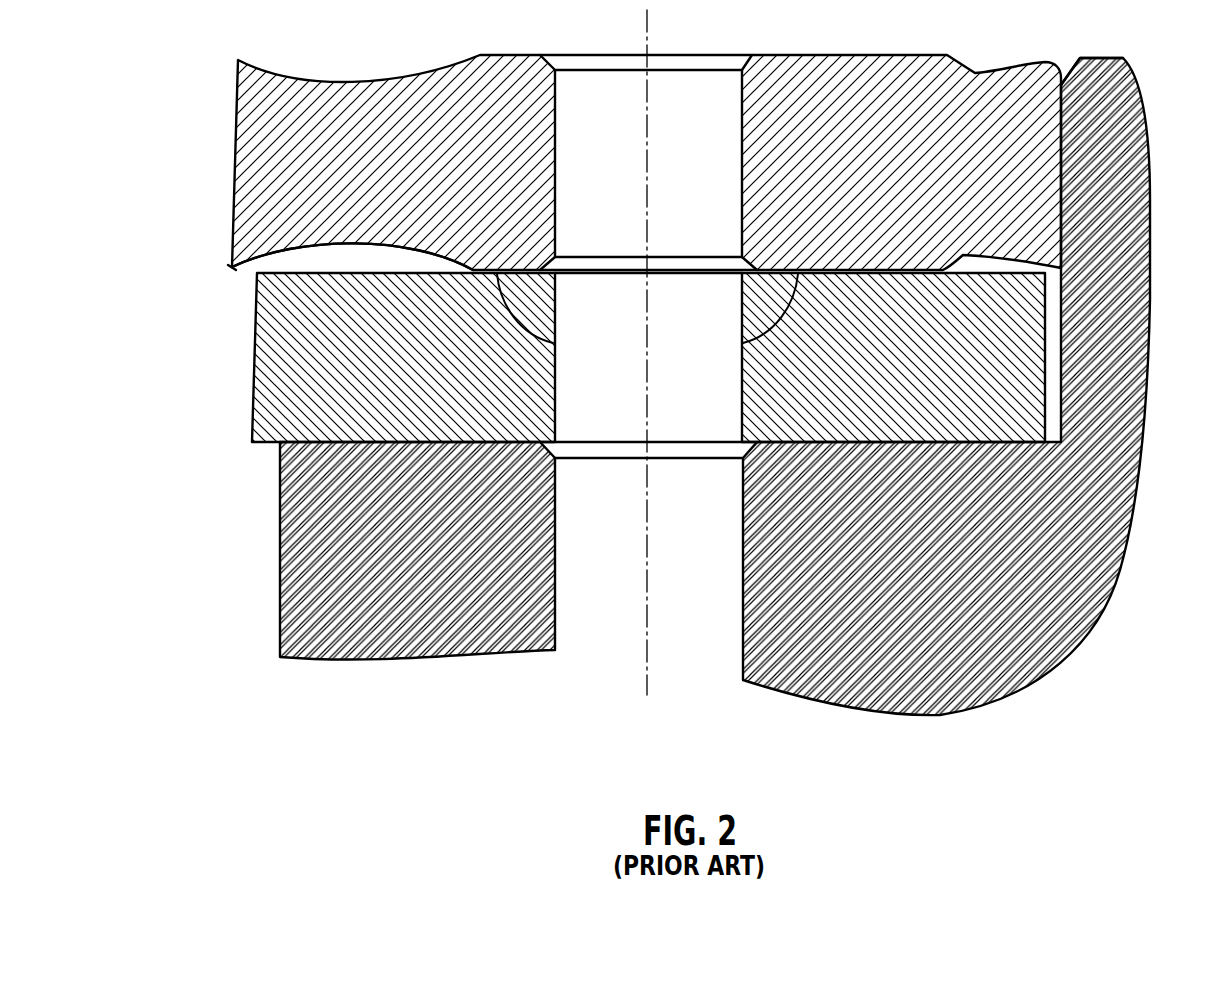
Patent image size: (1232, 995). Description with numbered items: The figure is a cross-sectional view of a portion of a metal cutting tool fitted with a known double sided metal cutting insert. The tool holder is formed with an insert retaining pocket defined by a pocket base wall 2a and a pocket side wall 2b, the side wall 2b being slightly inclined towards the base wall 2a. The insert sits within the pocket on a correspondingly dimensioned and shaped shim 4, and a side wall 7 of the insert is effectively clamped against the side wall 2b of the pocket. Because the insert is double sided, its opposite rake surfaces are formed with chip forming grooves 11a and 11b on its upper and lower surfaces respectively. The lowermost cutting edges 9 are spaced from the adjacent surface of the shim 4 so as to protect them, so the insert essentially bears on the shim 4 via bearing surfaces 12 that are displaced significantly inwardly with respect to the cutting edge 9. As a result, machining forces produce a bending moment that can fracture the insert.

The pocket base wall 2a is at (306, 440).
The pocket side wall 2b is at (1060, 107).
The shim 4 is at (250, 345).
The side wall of the cutting insert 7 is at (1063, 90).
The lowermost cutting edges 9 is at (233, 267).
The chip forming groove 11a is at (317, 80).
The chip forming groove 11b is at (292, 253).
The bearing surfaces 12 is at (555, 347).